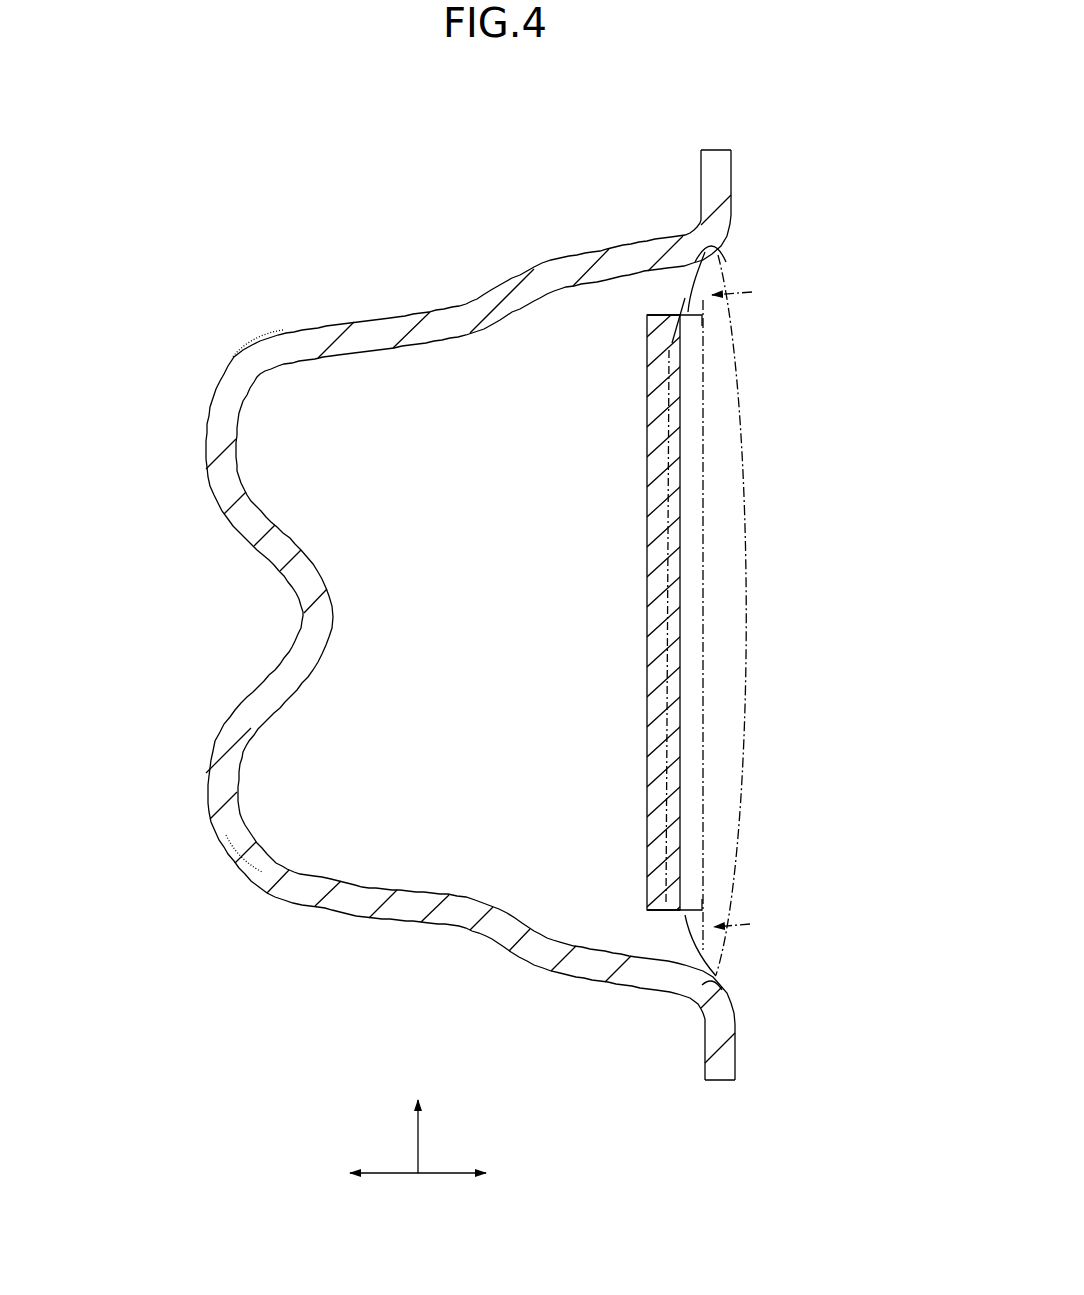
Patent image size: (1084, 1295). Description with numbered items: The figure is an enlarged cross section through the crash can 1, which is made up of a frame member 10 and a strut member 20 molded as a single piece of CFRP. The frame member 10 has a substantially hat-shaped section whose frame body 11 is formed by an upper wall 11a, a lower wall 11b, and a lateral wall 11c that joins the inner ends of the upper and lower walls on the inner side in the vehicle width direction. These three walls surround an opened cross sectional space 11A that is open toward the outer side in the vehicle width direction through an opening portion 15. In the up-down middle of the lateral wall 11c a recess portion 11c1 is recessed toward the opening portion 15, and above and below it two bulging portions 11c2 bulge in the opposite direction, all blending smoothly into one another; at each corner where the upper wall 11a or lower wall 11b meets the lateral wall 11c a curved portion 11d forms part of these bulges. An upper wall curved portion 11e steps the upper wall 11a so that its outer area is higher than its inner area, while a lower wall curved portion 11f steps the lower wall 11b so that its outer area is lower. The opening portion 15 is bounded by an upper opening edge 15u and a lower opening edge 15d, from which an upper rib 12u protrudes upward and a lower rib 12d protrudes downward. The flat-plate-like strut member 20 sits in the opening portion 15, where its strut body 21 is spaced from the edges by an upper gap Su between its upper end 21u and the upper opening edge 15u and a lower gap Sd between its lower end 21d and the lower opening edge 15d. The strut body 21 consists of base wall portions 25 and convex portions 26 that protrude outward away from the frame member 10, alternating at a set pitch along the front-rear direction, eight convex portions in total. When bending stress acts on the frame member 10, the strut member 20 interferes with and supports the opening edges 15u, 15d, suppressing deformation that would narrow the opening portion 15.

The crash can 1 is at (283, 222).
The frame member 10 is at (410, 617).
The frame body 11 is at (415, 923).
The upper wall 11a is at (600, 245).
The lower wall 11b is at (625, 983).
The lateral wall 11c is at (212, 504).
The recess portion 11c1 is at (240, 625).
The bulging portion 11c2 is at (190, 415).
The curved portion 11d is at (243, 360).
The upper wall curved portion 11e is at (518, 273).
The lower wall curved portion 11f is at (527, 962).
The opened cross sectional space 11A is at (480, 640).
The upper rib 12u is at (715, 148).
The lower rib 12d is at (720, 1082).
The opening portion 15 is at (757, 732).
The upper opening edge 15u is at (725, 252).
The lower opening edge 15d is at (727, 988).
The strut member 20 is at (636, 402).
The strut body 21 is at (647, 440).
The upper end of strut body 21u is at (662, 316).
The lower end of strut body 21d is at (662, 912).
The base wall portion 25 is at (647, 505).
The convex portion 26 is at (704, 485).
The upper gap Su is at (747, 293).
The lower gap Sd is at (748, 926).